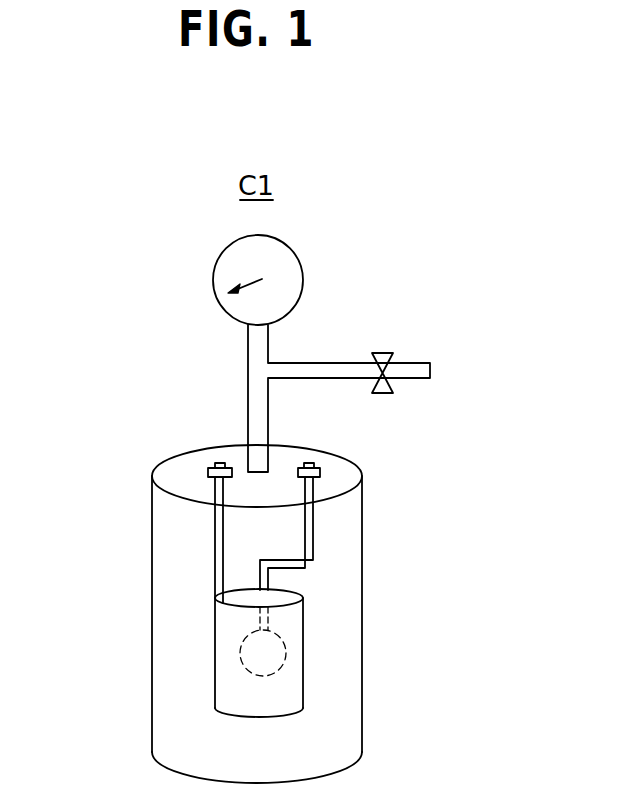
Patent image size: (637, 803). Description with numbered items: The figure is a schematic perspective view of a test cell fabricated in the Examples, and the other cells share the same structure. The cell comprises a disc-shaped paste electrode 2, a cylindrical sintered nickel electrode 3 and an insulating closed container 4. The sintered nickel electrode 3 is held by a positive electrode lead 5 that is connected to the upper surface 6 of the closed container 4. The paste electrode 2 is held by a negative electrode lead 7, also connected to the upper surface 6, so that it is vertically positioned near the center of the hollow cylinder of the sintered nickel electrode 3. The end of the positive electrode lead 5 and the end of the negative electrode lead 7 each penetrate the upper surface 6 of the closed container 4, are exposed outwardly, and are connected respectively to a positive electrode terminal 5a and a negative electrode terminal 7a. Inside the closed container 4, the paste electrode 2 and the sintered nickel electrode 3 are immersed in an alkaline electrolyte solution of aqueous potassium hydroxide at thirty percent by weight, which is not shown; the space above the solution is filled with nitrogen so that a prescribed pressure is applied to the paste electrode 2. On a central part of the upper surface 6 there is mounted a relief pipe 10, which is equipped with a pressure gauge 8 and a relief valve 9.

The paste electrode 2 is at (287, 650).
The sintered nickel electrode 3 is at (215, 642).
The closed container 4 is at (362, 548).
The positive electrode lead 5 is at (220, 520).
The positive electrode terminal 5a is at (218, 466).
The upper surface 6 is at (343, 480).
The negative electrode lead 7 is at (315, 522).
The negative electrode terminal 7a is at (312, 466).
The pressure gauge 8 is at (303, 263).
The relief valve 9 is at (390, 355).
The relief pipe 10 is at (304, 363).